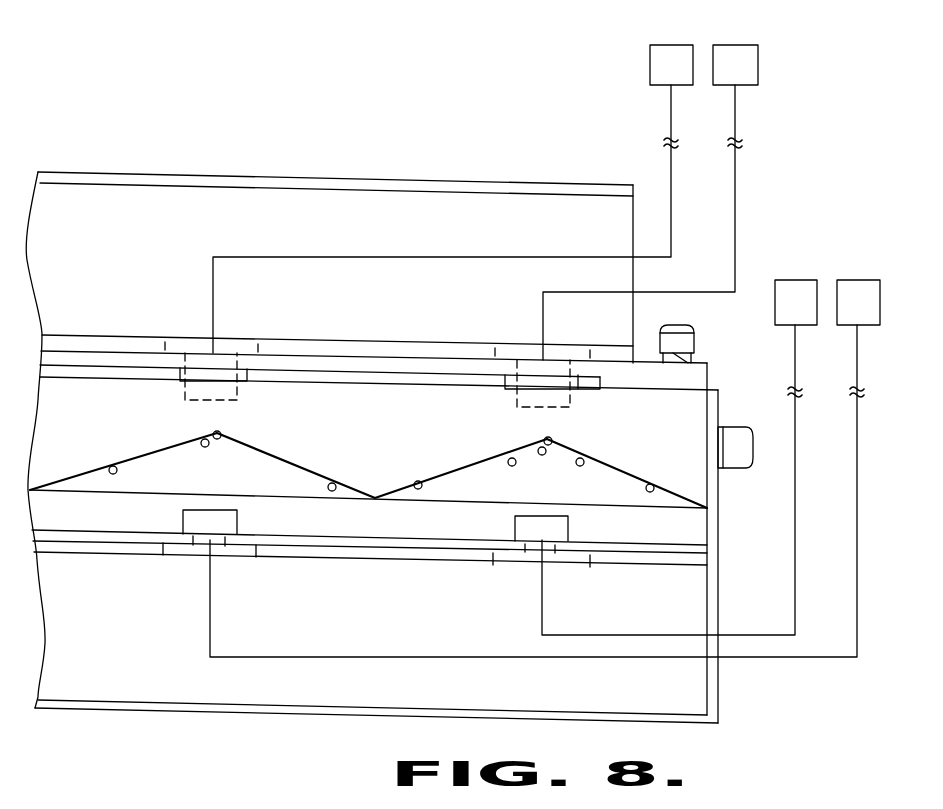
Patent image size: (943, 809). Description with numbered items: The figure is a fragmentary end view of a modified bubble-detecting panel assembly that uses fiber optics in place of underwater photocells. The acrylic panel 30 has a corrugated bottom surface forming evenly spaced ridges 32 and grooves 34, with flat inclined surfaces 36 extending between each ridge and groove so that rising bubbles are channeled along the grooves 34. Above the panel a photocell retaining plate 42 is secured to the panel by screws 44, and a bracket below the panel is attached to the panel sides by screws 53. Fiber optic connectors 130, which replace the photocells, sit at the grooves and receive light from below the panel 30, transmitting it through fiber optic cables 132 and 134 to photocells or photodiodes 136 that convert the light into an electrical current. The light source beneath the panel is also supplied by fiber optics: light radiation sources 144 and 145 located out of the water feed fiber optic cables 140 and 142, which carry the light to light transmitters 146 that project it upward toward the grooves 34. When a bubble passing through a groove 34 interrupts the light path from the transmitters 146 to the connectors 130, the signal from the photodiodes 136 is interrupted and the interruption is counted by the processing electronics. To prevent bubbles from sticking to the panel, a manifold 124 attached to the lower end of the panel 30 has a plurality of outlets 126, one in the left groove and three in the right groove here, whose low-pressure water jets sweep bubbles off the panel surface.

The acrylic panel 30 is at (695, 507).
The ridges 32 is at (375, 498).
The grooves 34 is at (222, 434).
The flat inclined surfaces 36 is at (113, 466).
The photocell retaining plate 42 is at (690, 374).
The screws 44 is at (695, 340).
The screws 53 is at (753, 450).
The manifold 124 is at (97, 496).
The outlets 126 is at (204, 447).
The fiber optic connectors 130 is at (185, 397).
The fiber optic cable 132 is at (366, 250).
The fiber optic cable 134 is at (543, 305).
The photocells or photodiodes 136 is at (650, 62).
The fiber optic cable 140 is at (543, 607).
The fiber optic cable 142 is at (212, 632).
The light radiation source 144 is at (786, 280).
The light radiation source 145 is at (860, 280).
The light transmitters 146 is at (237, 516).